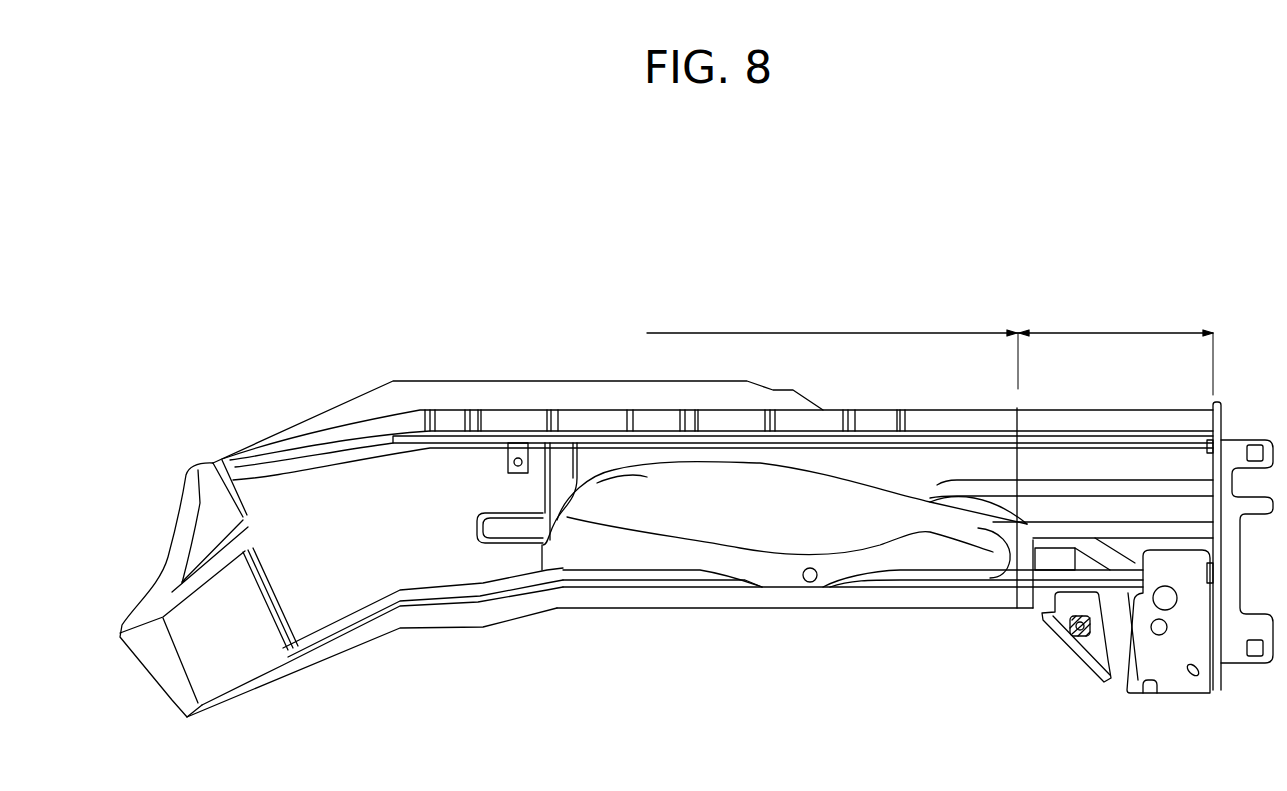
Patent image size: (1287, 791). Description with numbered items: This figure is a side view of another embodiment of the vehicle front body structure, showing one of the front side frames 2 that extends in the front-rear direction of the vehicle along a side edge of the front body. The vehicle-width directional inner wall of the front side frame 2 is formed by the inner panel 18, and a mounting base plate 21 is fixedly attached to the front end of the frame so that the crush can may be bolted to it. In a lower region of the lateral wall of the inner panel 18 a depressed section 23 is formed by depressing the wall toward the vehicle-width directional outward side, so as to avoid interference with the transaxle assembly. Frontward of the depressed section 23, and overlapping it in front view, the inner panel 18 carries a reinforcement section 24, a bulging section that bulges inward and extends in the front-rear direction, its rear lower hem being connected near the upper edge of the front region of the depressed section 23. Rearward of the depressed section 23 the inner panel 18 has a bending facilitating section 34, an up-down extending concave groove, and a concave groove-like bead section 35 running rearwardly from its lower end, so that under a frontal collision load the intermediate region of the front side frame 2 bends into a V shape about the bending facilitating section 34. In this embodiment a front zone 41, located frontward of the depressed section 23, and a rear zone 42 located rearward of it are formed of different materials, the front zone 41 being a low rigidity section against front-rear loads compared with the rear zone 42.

The front side frame 2 is at (696, 616).
The inner panel 18 is at (383, 577).
The mounting base plate 21 is at (1223, 424).
The depressed section 23 is at (793, 528).
The reinforcement section 24 is at (1048, 516).
The bending facilitating section 34 is at (563, 457).
The bead section 35 is at (497, 534).
The front zone 41 is at (1120, 333).
The rear zone 42 is at (893, 333).